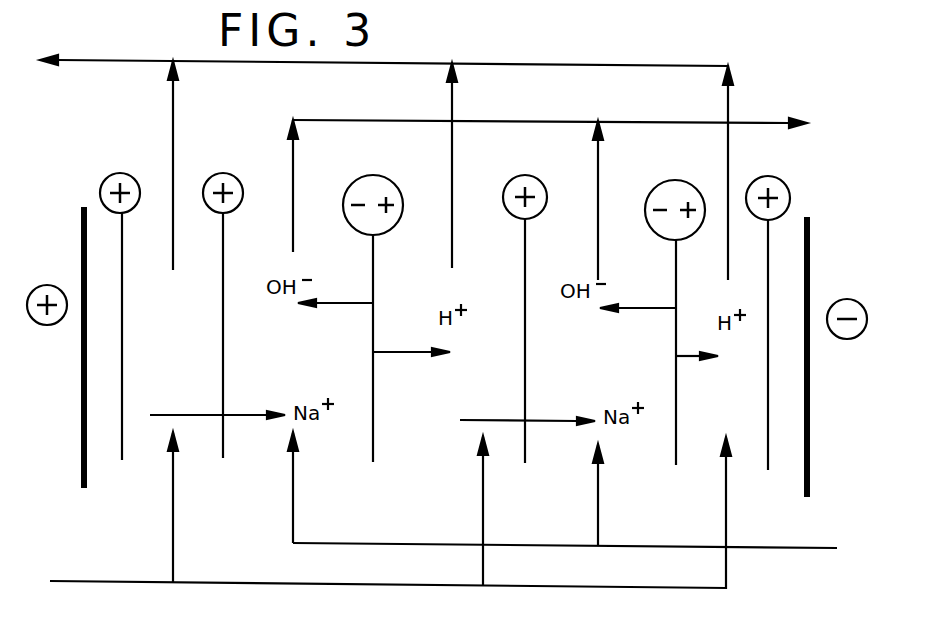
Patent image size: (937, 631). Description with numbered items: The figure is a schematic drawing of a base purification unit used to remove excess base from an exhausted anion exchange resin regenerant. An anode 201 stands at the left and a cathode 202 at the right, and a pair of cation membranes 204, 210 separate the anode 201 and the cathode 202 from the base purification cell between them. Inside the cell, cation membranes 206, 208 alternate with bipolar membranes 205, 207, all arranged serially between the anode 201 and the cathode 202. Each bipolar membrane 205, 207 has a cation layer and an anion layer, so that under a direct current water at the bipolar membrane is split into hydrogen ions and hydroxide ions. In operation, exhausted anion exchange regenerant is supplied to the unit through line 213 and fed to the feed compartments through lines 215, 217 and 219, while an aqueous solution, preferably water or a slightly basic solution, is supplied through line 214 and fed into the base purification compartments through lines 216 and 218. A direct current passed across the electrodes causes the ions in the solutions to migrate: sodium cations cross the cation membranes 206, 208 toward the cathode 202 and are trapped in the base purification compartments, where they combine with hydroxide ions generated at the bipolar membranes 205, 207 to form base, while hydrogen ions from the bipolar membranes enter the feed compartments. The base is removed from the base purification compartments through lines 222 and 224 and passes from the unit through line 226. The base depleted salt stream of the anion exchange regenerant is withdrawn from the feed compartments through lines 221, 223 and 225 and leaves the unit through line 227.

The anode 201 is at (84, 280).
The cathode 202 is at (807, 290).
The cation membrane 204 is at (122, 275).
The bipolar membrane 205 is at (373, 276).
The cation membrane 206 is at (223, 298).
The bipolar membrane 207 is at (676, 269).
The cation membrane 208 is at (525, 291).
The cation membrane 210 is at (768, 240).
The line 213 is at (105, 582).
The line 214 is at (780, 548).
The line 215 is at (173, 505).
The line 216 is at (293, 482).
The line 217 is at (483, 488).
The line 218 is at (598, 488).
The line 219 is at (726, 490).
The line 221 is at (173, 110).
The line 222 is at (293, 155).
The line 223 is at (452, 95).
The line 224 is at (598, 165).
The line 225 is at (728, 100).
The line 226 is at (757, 122).
The line 227 is at (120, 62).